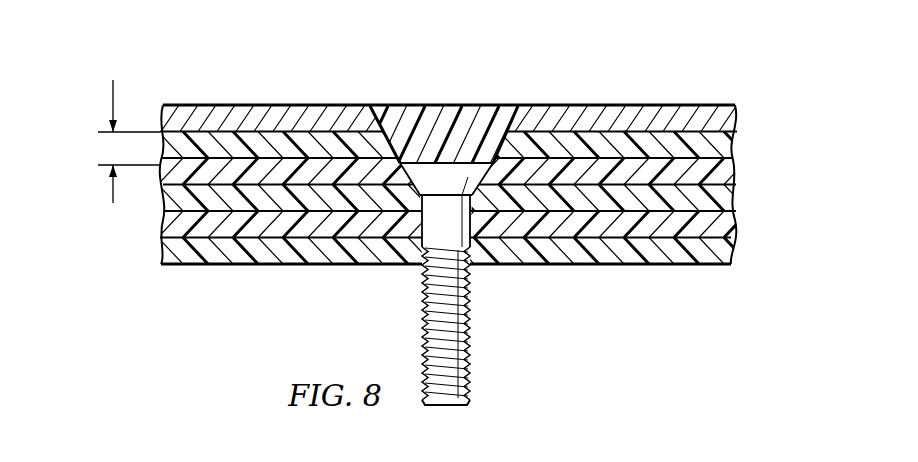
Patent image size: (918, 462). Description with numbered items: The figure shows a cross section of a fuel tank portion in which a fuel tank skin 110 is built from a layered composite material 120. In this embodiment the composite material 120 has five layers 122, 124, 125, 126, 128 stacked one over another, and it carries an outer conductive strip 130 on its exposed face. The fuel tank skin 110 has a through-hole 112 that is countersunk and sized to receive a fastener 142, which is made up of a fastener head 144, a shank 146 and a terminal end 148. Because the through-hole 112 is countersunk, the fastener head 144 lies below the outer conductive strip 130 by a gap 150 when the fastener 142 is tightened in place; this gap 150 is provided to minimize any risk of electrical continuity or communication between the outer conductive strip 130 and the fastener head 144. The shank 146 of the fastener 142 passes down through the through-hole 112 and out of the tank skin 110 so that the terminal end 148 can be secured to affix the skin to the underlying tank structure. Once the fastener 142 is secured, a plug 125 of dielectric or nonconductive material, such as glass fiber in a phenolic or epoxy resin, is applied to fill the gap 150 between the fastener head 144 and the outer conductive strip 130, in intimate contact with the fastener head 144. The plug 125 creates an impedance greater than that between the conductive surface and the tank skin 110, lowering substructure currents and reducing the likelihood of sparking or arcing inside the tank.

The fuel tank skin 110 is at (449, 172).
The through-hole 112 is at (406, 225).
The layered composite material 120 is at (481, 228).
The layer 122 is at (735, 148).
The layer 124 is at (738, 177).
The plug 125 is at (738, 200).
The layer 126 is at (733, 222).
The layer 128 is at (732, 250).
The outer conductive strip 130 is at (740, 112).
The fastener 142 is at (443, 336).
The fastener head 144 is at (447, 180).
The shank 146 is at (470, 355).
The terminal end 148 is at (447, 405).
The gap 150 is at (110, 97).